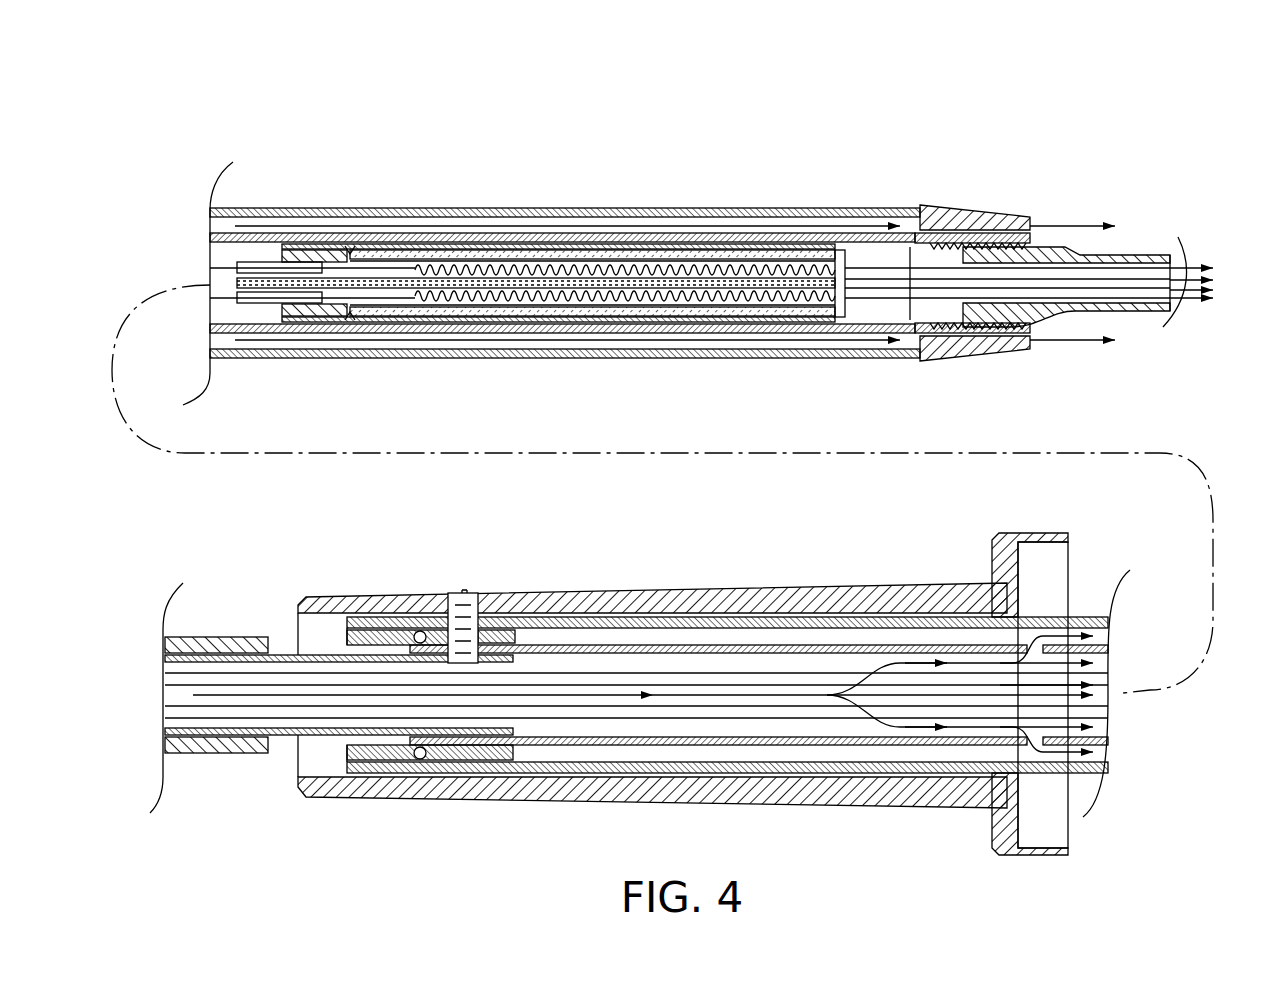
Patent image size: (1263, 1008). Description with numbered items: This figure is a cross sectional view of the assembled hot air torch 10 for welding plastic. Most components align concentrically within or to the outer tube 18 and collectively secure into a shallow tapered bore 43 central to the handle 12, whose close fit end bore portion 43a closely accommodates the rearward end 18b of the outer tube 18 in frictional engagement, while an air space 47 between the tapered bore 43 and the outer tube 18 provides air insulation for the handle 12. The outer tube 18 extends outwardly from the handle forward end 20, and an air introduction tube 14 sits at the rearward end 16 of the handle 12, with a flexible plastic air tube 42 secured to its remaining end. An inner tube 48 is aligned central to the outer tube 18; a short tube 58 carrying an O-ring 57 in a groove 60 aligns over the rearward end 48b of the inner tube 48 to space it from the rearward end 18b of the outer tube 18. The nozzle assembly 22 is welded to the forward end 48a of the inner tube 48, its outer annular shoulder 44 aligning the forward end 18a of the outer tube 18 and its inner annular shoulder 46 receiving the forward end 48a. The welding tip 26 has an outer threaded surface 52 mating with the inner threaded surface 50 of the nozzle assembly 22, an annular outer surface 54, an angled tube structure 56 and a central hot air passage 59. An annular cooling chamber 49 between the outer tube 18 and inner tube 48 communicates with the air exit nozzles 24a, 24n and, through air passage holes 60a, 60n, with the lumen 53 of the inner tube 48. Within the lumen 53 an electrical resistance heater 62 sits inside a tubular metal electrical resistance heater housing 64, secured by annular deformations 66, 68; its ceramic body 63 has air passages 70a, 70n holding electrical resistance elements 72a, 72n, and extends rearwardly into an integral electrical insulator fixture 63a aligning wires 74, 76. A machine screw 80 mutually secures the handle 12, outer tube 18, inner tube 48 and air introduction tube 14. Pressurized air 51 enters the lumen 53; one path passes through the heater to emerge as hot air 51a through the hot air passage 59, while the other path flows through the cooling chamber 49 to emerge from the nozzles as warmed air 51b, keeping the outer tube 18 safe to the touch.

The torch 10 is at (235, 88).
The handle 12 is at (762, 810).
The air introduction tube 14 is at (287, 657).
The rearward end 16 is at (342, 795).
The outer tube 18 is at (605, 207).
The forward end of the outer tube 18a is at (855, 206).
The rearward end of the outer tube 18b is at (358, 626).
The handle forward end 20 is at (1022, 856).
The nozzle assembly 22 is at (973, 203).
The air exit nozzle 24a is at (1015, 232).
The air exit nozzle 24n is at (1018, 332).
The welding tip 26 is at (1130, 250).
The flexible plastic air tube 42 is at (248, 755).
The tapered bore 43 is at (943, 612).
The close fit end bore portion 43a is at (372, 779).
The outer annular shoulder 44 is at (918, 240).
The inner annular shoulder 46 is at (912, 245).
The air space 47 is at (892, 614).
The inner tube 48 is at (820, 330).
The forward end of the inner tube 48a is at (943, 330).
The rearward end of the inner tube 48b is at (487, 742).
The annular cooling chamber 49 is at (650, 230).
The inner threaded surface 50 is at (948, 330).
The air 51 is at (287, 698).
The hot air 51a is at (1185, 298).
The warmed air 51b is at (1088, 222).
The outer threaded surface 52 is at (1078, 310).
The lumen 53 is at (825, 668).
The annular outer surface 54 is at (1053, 328).
The angled tube structure 56 is at (1160, 253).
The O-ring 57 is at (416, 631).
The short tube 58 is at (395, 630).
The central hot air passage 59 is at (1142, 295).
The groove 60 is at (412, 759).
The air passage hole 60a is at (1030, 645).
The air passage hole 60n is at (1027, 750).
The electrical resistance heater 62 is at (527, 266).
The ceramic body 63 is at (748, 258).
The integral electrical insulator fixture 63a is at (257, 262).
The tubular metal electrical resistance heater housing 64 is at (695, 290).
The annular deformation 66 is at (840, 247).
The annular deformation 68 is at (350, 244).
The air passage 70a is at (370, 258).
The air passage 70n is at (385, 304).
The electrical resistance element 72a is at (445, 252).
The electrical resistance element 72n is at (450, 300).
The electrical wire 74 is at (223, 268).
The electrical wire 76 is at (223, 300).
The machine screw 80 is at (472, 594).